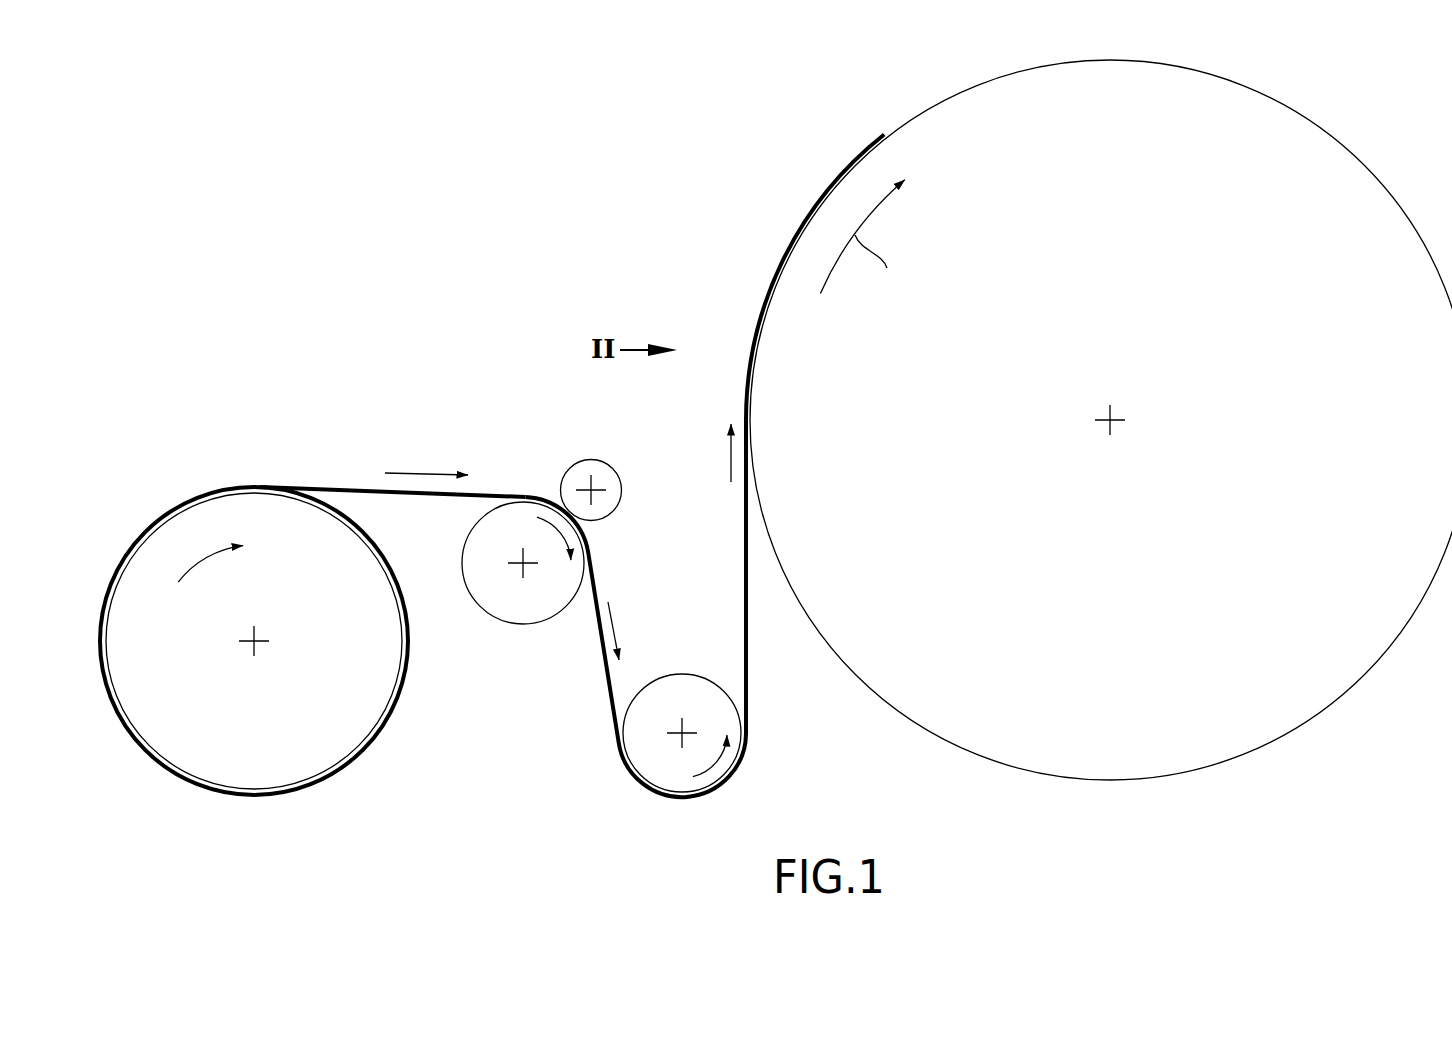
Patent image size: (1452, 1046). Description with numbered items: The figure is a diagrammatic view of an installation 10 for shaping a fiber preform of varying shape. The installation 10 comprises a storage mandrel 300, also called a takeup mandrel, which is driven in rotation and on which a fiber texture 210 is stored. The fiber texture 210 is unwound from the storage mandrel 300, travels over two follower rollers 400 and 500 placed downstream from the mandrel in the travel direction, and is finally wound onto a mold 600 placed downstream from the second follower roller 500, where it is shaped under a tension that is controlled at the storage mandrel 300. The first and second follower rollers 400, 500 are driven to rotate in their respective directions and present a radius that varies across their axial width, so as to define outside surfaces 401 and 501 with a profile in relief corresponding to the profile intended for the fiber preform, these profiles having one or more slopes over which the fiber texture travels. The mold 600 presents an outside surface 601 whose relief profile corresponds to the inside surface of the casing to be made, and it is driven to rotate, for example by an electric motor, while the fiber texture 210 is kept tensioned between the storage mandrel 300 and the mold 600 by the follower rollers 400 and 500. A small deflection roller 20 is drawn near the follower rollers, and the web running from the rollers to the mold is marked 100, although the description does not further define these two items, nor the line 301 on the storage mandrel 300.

The installation 10 is at (243, 163).
The deflection roller 20 is at (611, 463).
The electrode web 100 is at (743, 513).
The fiber texture 210 is at (306, 486).
The storage mandrel 300 is at (269, 684).
The unwinding roll surface 301 is at (378, 733).
The first follower roller 400 is at (495, 608).
The outside surface 401 is at (483, 612).
The second follower roller 500 is at (682, 682).
The outside surface 501 is at (690, 672).
The mold 600 is at (1101, 405).
The outside surface 601 is at (958, 93).